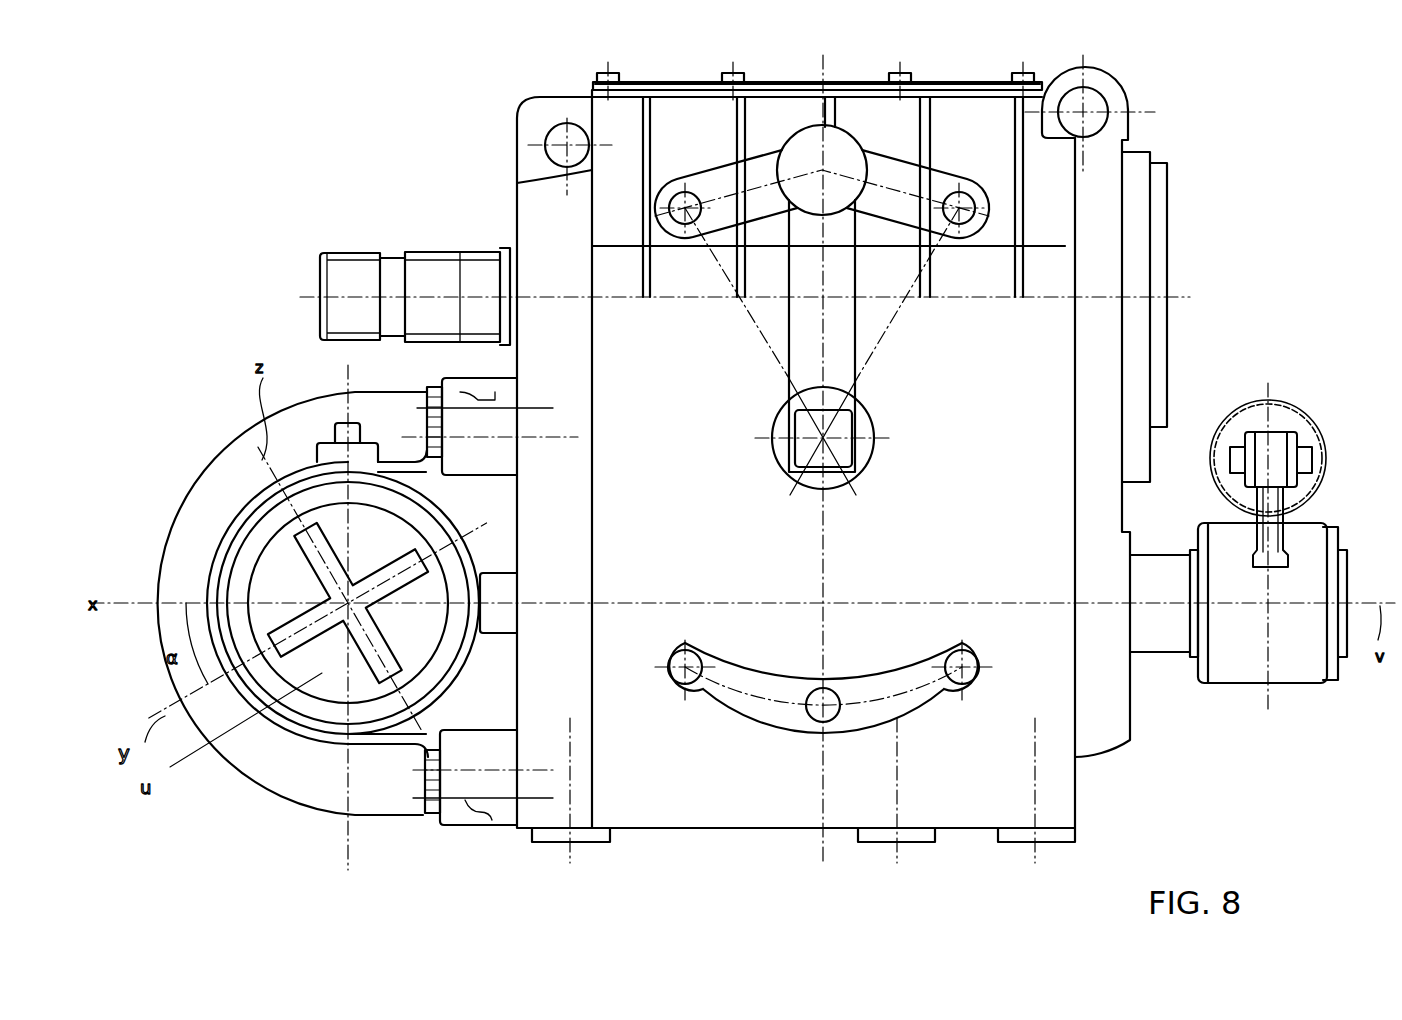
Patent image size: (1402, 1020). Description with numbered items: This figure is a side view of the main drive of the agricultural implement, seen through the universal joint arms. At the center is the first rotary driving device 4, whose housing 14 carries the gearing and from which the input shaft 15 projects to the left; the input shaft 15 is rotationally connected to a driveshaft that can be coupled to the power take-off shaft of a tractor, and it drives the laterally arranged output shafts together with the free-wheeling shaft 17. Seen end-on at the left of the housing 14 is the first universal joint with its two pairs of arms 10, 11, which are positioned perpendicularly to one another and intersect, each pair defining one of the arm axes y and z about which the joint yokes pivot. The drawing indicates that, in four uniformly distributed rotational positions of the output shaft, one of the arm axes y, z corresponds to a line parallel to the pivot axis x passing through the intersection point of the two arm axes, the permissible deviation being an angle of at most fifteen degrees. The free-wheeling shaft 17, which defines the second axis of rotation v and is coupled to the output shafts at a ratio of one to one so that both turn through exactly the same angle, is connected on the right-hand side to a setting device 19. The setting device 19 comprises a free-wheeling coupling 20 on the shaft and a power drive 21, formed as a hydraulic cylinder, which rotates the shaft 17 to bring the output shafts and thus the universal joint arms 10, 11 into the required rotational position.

The first rotary driving device 4 is at (800, 38).
The housing 14 is at (963, 82).
The input shaft 15 is at (362, 268).
The pair of arms 10 is at (315, 588).
The pair of arms 11 is at (347, 673).
The free-wheeling shaft 17 is at (1168, 638).
The free-wheeling coupling 20 is at (1303, 673).
The power drive 21 is at (1310, 430).
The setting device 19 is at (1267, 380).